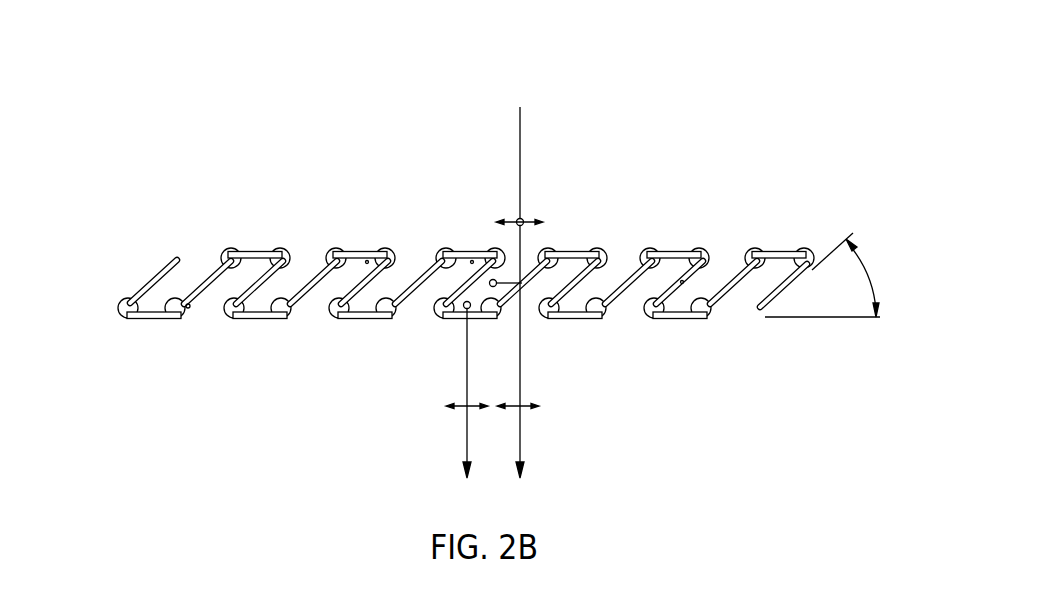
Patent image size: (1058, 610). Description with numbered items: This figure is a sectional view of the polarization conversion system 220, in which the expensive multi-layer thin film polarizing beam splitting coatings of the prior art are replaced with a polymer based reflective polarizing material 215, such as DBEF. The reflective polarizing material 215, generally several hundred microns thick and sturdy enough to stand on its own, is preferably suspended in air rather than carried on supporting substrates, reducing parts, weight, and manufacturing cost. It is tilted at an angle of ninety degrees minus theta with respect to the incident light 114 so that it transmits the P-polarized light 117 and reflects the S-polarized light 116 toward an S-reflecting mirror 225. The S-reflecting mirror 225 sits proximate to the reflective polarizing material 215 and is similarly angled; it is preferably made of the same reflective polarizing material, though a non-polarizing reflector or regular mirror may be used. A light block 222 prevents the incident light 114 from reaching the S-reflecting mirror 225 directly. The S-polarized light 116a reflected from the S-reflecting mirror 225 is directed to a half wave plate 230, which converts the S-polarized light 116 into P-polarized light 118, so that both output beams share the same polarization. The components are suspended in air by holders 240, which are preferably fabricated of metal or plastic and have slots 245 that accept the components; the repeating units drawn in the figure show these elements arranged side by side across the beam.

The polarization conversion system 220 is at (217, 127).
The light block 222 is at (260, 249).
The half wave plate 230 is at (158, 319).
The reflective polarizing material 215 is at (320, 282).
The holder 240 is at (224, 254).
The S-reflecting mirror 225 is at (367, 255).
The slot 245 is at (195, 313).
The incident light 114 is at (520, 172).
The S-polarized light 116 is at (500, 268).
The S-polarized light reflected from the S-reflecting mirror 116a is at (462, 313).
The P-polarized light 117 is at (520, 420).
The P-polarized light 118 is at (467, 420).